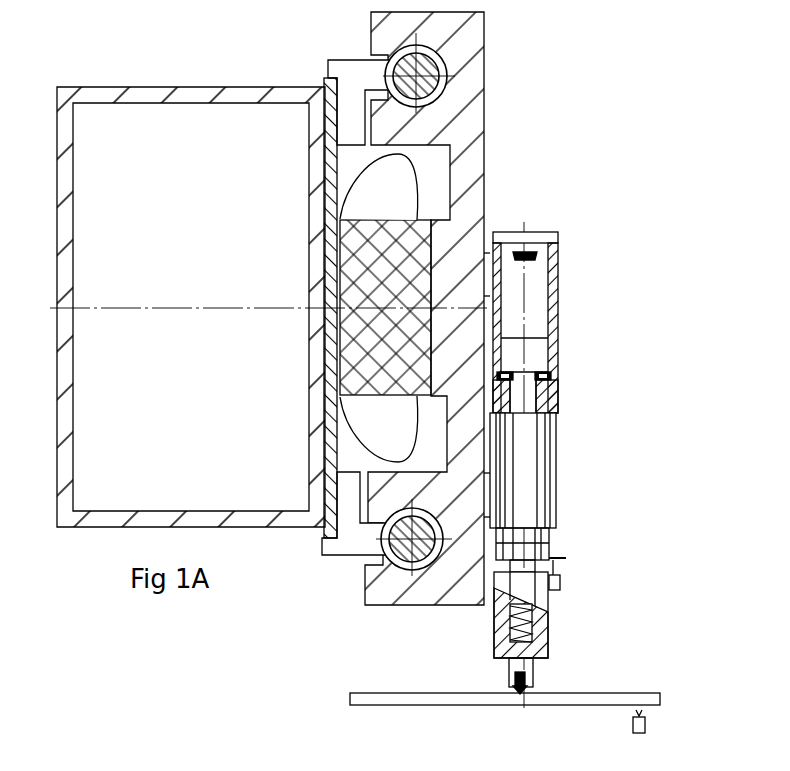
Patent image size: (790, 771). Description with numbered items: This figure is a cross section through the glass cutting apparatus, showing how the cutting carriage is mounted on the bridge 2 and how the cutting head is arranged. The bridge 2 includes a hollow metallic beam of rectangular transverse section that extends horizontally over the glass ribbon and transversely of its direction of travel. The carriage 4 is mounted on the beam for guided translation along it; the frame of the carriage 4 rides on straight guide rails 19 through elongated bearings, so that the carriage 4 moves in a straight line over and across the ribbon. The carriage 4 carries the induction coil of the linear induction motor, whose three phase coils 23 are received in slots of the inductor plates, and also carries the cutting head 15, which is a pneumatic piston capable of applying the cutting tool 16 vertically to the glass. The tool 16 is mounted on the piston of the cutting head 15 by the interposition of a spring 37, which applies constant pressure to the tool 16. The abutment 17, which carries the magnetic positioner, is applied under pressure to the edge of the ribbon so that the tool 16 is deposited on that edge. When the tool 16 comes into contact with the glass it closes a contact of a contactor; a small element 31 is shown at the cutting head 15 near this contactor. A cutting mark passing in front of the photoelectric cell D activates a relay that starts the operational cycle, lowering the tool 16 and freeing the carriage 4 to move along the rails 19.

The bridge 2 is at (182, 90).
The carriage 4 is at (470, 36).
The guide rails 19 is at (356, 289).
The abutment 17 is at (415, 304).
The three phase coils 23 is at (404, 201).
The cutting head 15 is at (558, 323).
The bracket 31 is at (561, 582).
The spring 37 is at (533, 627).
The cutting tool 16 is at (528, 691).
The photoelectric cell D is at (647, 725).